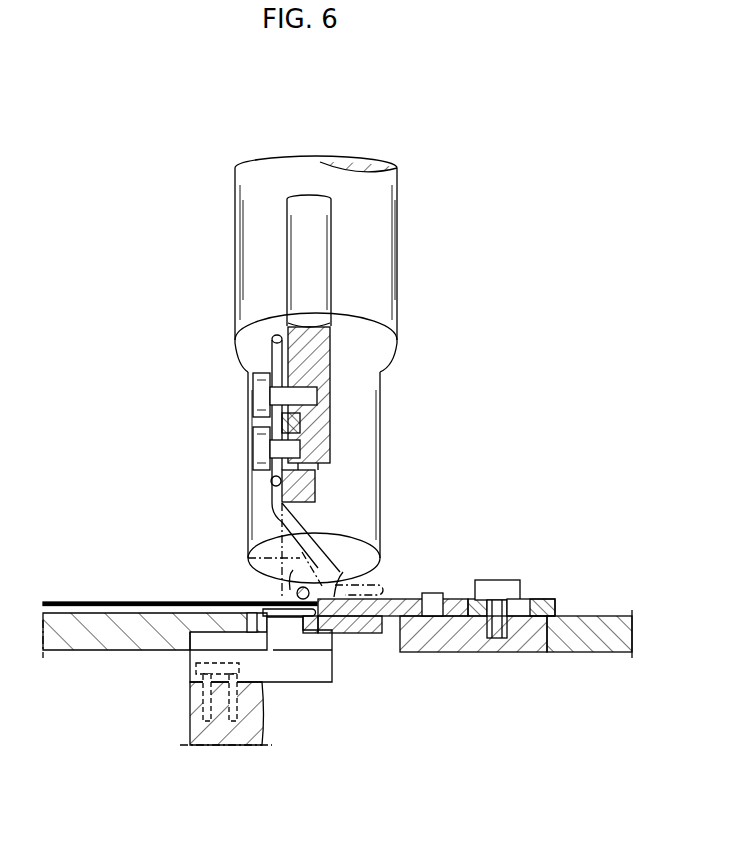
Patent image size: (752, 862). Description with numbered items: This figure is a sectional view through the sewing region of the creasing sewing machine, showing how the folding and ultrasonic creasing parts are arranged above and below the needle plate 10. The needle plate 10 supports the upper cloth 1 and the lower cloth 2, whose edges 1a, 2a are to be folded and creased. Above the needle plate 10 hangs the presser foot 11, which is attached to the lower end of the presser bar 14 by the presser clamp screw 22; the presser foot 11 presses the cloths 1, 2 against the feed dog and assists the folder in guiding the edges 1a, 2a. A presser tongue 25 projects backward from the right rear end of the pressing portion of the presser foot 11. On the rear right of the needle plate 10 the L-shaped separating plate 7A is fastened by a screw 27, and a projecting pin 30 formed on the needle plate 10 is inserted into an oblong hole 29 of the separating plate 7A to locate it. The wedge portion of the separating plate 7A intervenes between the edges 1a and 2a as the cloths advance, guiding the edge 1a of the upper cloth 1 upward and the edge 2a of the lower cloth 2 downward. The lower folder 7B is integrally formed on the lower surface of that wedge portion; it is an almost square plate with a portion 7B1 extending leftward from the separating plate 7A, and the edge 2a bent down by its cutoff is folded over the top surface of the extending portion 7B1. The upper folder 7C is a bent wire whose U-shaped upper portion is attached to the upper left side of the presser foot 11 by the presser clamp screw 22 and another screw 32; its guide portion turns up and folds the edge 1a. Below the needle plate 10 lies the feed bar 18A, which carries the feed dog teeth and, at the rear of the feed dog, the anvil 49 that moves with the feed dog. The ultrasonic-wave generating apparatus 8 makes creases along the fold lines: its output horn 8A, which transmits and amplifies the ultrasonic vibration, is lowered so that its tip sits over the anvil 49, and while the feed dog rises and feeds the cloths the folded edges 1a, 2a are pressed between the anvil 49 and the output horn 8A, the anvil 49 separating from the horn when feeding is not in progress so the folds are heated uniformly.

The upper cloth 1 is at (81, 602).
The edge of the upper cloth 1a is at (247, 556).
The lower cloth 2 is at (101, 610).
The edge of the lower cloth 2a is at (277, 620).
The separating plate 7A is at (546, 600).
The lower folder 7B is at (372, 635).
The extending portion of the lower folder 7B1 is at (312, 633).
The upper folder 7C is at (270, 357).
The ultrasonic-wave generating apparatus 8 is at (402, 266).
The output horn 8A is at (374, 407).
The needle plate 10 is at (472, 653).
The presser foot 11 is at (317, 488).
The presser bar 14 is at (296, 203).
The feed bar 18A is at (193, 737).
The presser clamp screw 22 is at (258, 402).
The presser tongue 25 is at (297, 592).
The screw 27 is at (505, 582).
The oblong hole 29 is at (463, 600).
The projecting pin 30 is at (432, 593).
The screw 32 is at (258, 450).
The anvil 49 is at (280, 673).